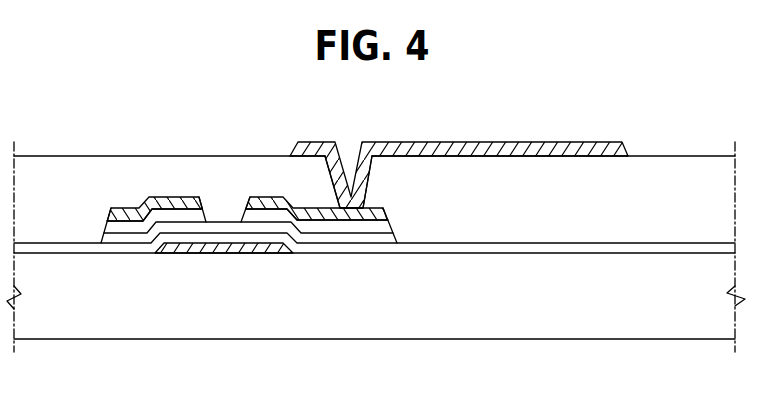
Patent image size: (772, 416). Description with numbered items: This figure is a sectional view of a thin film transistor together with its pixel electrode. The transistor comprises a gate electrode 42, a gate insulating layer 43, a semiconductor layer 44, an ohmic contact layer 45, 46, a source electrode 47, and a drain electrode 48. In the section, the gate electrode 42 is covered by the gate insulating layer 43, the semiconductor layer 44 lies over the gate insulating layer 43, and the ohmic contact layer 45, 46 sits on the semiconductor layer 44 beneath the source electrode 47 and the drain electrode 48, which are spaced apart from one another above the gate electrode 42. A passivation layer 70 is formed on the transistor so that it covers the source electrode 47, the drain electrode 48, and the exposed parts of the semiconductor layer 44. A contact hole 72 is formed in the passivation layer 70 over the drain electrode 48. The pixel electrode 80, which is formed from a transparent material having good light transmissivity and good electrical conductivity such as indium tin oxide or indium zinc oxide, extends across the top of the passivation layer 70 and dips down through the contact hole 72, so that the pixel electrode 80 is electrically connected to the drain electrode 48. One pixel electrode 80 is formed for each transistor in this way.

The gate electrode 42 is at (220, 252).
The gate insulating layer 43 is at (83, 247).
The semiconductor layer 44 is at (222, 227).
The ohmic contact layer 45 is at (129, 228).
The ohmic contact layer 46 is at (331, 227).
The source electrode 47 is at (163, 197).
The drain electrode 48 is at (272, 195).
The passivation layer 70 is at (670, 158).
The contact hole 72 is at (368, 180).
The pixel electrode 80 is at (510, 147).